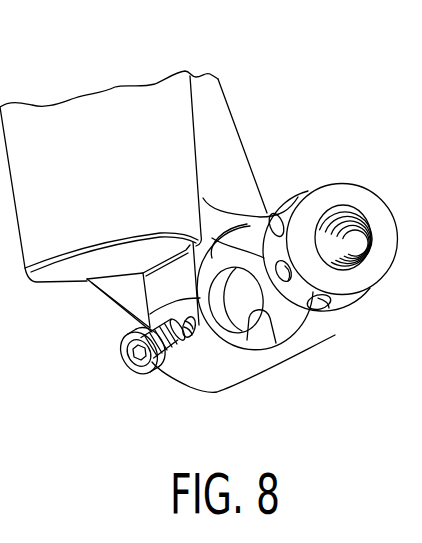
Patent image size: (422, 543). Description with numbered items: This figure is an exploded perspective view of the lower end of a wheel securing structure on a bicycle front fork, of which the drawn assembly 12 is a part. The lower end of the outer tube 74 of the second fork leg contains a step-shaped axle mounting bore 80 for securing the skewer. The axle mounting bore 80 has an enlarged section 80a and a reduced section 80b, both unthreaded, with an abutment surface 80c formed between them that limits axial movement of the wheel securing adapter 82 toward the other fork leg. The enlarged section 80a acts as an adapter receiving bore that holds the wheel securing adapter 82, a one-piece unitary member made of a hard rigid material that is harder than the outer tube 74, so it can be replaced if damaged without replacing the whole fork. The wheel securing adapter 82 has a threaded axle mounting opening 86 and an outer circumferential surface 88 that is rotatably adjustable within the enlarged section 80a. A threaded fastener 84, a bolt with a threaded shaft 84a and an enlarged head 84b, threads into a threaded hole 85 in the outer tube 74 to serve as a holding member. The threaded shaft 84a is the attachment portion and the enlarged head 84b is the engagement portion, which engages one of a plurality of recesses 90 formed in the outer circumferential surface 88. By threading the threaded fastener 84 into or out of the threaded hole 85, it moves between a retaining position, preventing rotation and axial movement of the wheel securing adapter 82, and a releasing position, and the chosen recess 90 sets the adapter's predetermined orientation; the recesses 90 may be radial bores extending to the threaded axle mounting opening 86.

The mounting assembly 12 is at (357, 112).
The outer tube 74 is at (117, 84).
The axle mounting bore 80 is at (238, 300).
The enlarged section 80a is at (248, 208).
The reduced section 80b is at (276, 343).
The abutment surface 80c is at (245, 365).
The wheel securing adapter 82 is at (338, 166).
The threaded fastener 84 is at (117, 390).
The threaded shaft 84a is at (163, 352).
The enlarged head 84b is at (156, 372).
The threaded hole 85 is at (189, 337).
The threaded axle mounting opening 86 is at (356, 215).
The outer circumferential surface 88 is at (346, 296).
The recesses 90 is at (275, 211).